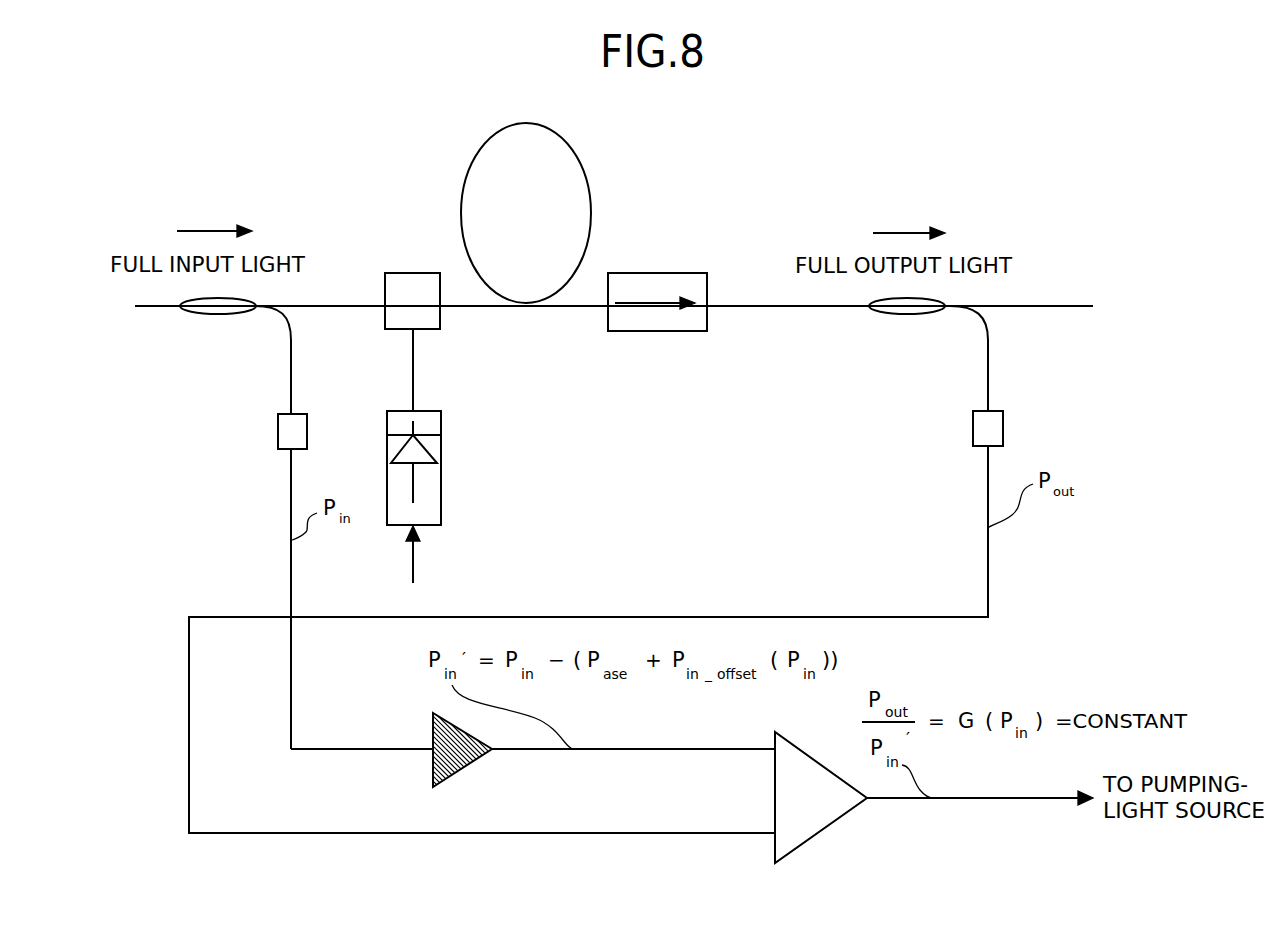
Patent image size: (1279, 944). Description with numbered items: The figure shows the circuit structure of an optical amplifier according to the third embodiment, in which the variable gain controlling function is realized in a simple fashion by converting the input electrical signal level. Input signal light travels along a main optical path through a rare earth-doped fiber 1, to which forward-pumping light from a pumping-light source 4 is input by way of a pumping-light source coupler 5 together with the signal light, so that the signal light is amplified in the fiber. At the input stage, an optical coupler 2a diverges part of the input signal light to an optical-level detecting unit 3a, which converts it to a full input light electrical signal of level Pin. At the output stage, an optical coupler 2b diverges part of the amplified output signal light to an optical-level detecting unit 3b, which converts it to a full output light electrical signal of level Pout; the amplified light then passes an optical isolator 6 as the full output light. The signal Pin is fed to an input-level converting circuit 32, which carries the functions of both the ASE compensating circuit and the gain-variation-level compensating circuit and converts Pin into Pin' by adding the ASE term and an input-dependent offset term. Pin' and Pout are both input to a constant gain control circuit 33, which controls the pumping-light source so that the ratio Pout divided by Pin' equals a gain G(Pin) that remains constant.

The rare earth-doped fiber 1 is at (579, 220).
The optical coupler 2a is at (207, 307).
The optical coupler 2b is at (895, 307).
The optical-level detecting unit 3a is at (287, 429).
The optical-level detecting unit 3b is at (985, 423).
The pumping-light source 4 is at (428, 487).
The pumping-light source coupler 5 is at (417, 300).
The optical isolator 6 is at (688, 283).
The input-level converting circuit 32 is at (433, 767).
The constant gain control circuit 33 is at (817, 812).